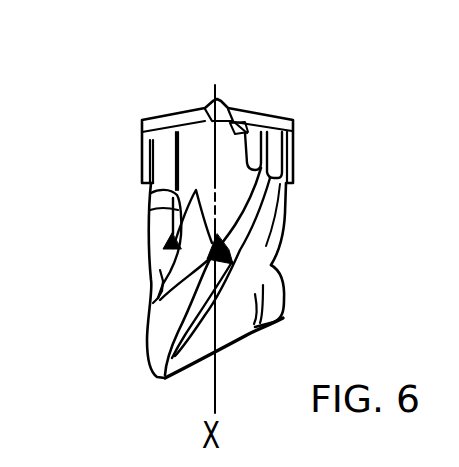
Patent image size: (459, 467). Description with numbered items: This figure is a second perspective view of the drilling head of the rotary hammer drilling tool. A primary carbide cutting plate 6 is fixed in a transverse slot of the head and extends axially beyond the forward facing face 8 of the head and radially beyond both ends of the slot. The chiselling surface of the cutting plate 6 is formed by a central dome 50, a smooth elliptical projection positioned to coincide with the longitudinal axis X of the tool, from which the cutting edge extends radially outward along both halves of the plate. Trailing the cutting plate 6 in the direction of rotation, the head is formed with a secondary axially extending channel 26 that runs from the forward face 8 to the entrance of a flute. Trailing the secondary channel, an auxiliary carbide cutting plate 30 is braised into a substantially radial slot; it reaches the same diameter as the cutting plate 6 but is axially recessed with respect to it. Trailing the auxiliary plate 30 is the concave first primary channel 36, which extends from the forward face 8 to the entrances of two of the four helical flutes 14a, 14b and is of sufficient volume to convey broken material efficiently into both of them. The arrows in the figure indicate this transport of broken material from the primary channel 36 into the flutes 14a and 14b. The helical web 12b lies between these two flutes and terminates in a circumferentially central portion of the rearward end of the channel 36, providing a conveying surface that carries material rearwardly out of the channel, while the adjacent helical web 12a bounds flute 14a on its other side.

The cutting plate 6 is at (148, 133).
The forward facing face 8 is at (232, 127).
The central dome 50 is at (215, 100).
The first primary channel 36 is at (198, 153).
The auxiliary cutting plate 30 is at (253, 143).
The secondary axially extending channel 26 is at (273, 158).
The helical web 12a is at (276, 257).
The helical web 12b is at (158, 298).
The helical flute 14a is at (197, 281).
The helical flute 14b is at (150, 258).